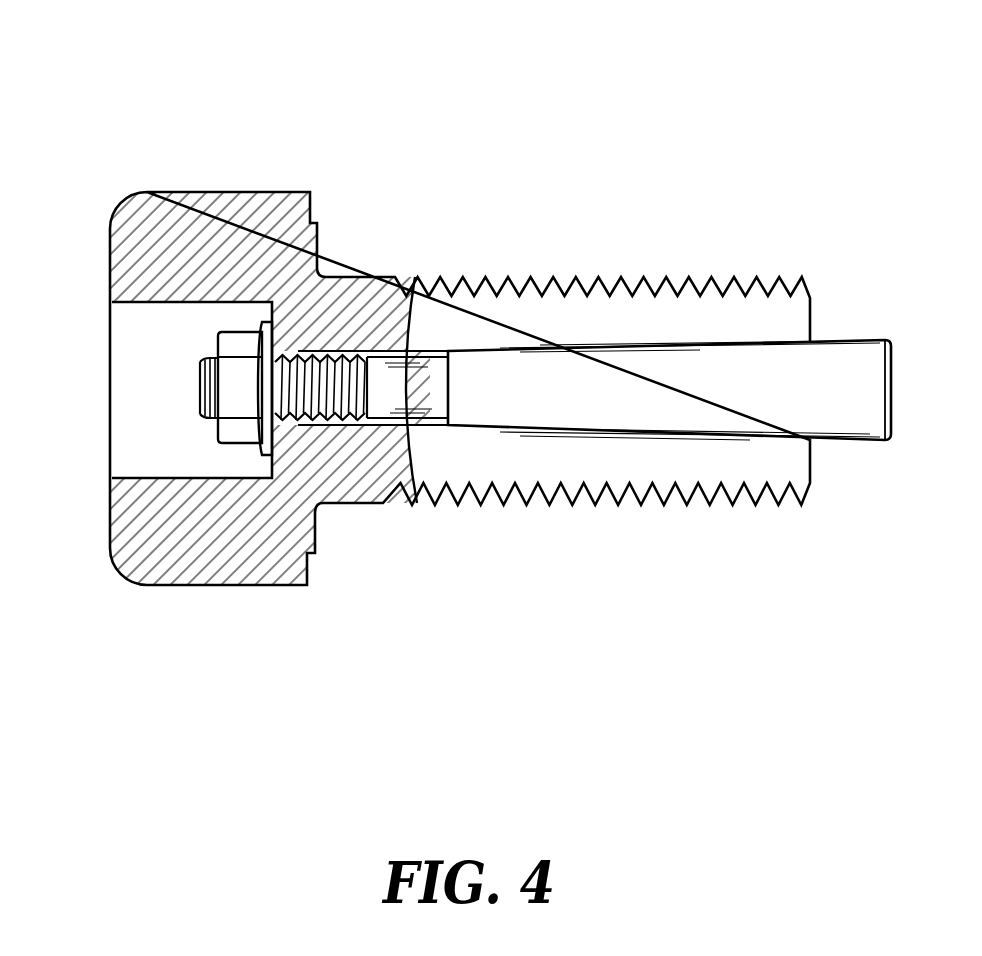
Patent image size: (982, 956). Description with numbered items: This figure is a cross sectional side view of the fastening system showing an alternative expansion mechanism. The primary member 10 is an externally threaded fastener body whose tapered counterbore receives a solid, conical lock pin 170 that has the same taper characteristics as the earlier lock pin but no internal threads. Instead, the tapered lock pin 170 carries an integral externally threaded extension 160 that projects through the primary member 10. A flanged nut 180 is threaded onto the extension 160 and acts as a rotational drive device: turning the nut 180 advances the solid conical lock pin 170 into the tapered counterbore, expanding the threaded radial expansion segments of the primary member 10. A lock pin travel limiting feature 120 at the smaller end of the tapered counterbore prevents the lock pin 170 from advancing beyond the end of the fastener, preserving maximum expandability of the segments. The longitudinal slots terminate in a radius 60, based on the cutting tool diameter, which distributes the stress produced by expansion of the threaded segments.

The primary member 10 is at (373, 503).
The radius 60 is at (412, 325).
The lock pin travel limiting feature 120 is at (303, 423).
The externally threaded extension 160 is at (320, 352).
The lock pin 170 is at (852, 340).
The flanged nut 180 is at (243, 333).